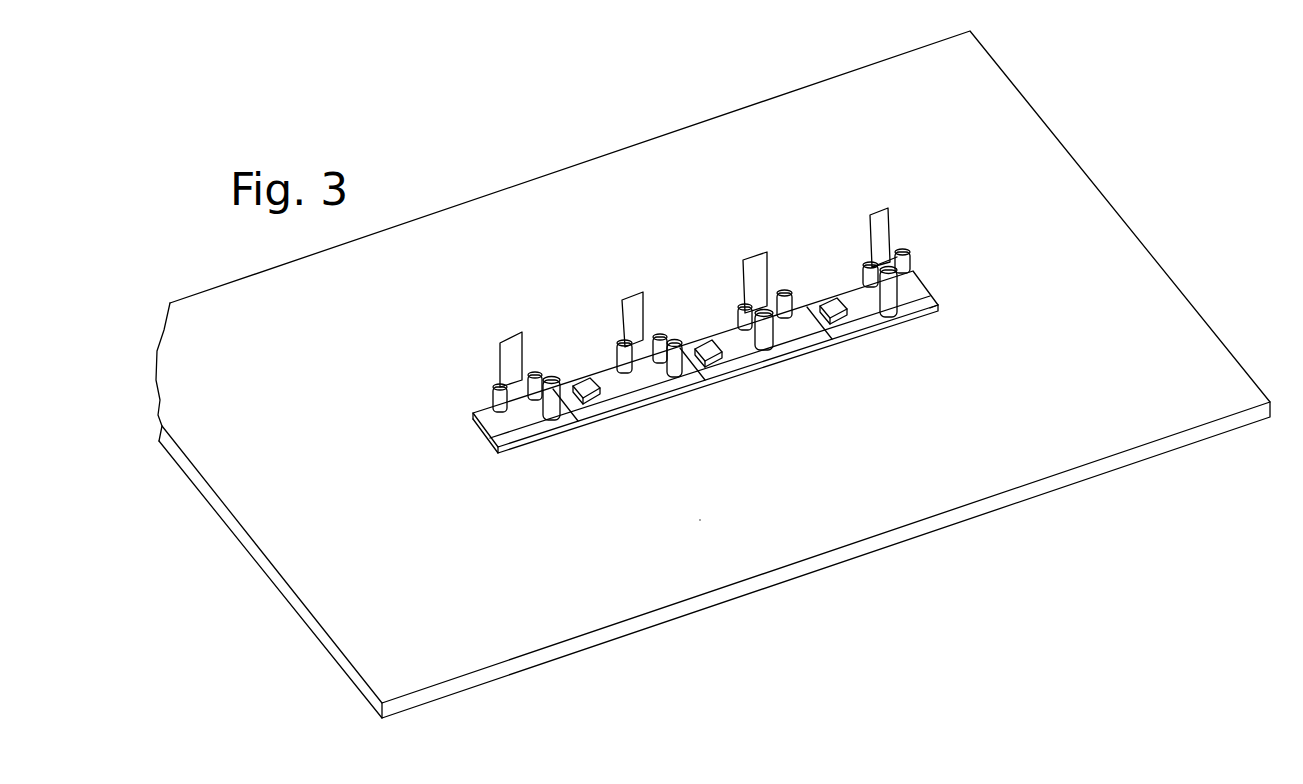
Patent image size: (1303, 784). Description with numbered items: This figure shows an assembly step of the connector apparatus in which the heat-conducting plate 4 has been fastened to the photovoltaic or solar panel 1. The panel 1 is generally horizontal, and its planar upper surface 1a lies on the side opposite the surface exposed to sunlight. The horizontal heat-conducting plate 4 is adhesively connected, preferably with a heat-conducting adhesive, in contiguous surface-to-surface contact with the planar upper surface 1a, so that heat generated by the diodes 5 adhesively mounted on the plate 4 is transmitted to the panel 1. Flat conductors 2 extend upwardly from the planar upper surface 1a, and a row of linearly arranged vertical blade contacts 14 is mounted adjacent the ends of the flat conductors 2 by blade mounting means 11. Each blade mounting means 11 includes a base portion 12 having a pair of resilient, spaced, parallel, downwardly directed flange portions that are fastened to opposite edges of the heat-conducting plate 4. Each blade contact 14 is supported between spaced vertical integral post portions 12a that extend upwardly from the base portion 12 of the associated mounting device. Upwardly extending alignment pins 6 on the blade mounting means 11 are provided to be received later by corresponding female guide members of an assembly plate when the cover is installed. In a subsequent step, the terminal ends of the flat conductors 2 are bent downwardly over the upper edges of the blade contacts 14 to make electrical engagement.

The photovoltaic panel 1 is at (1183, 398).
The planar upper surface 1a is at (573, 583).
The flat conductor 2 is at (878, 233).
The heat-conducting plate 4 is at (826, 325).
The diode 5 is at (707, 362).
The alignment pin 6 is at (550, 383).
The blade mounting means 11 is at (926, 320).
The base portion 12 is at (525, 425).
The post portion 12a is at (495, 393).
The blade contact 14 is at (897, 257).